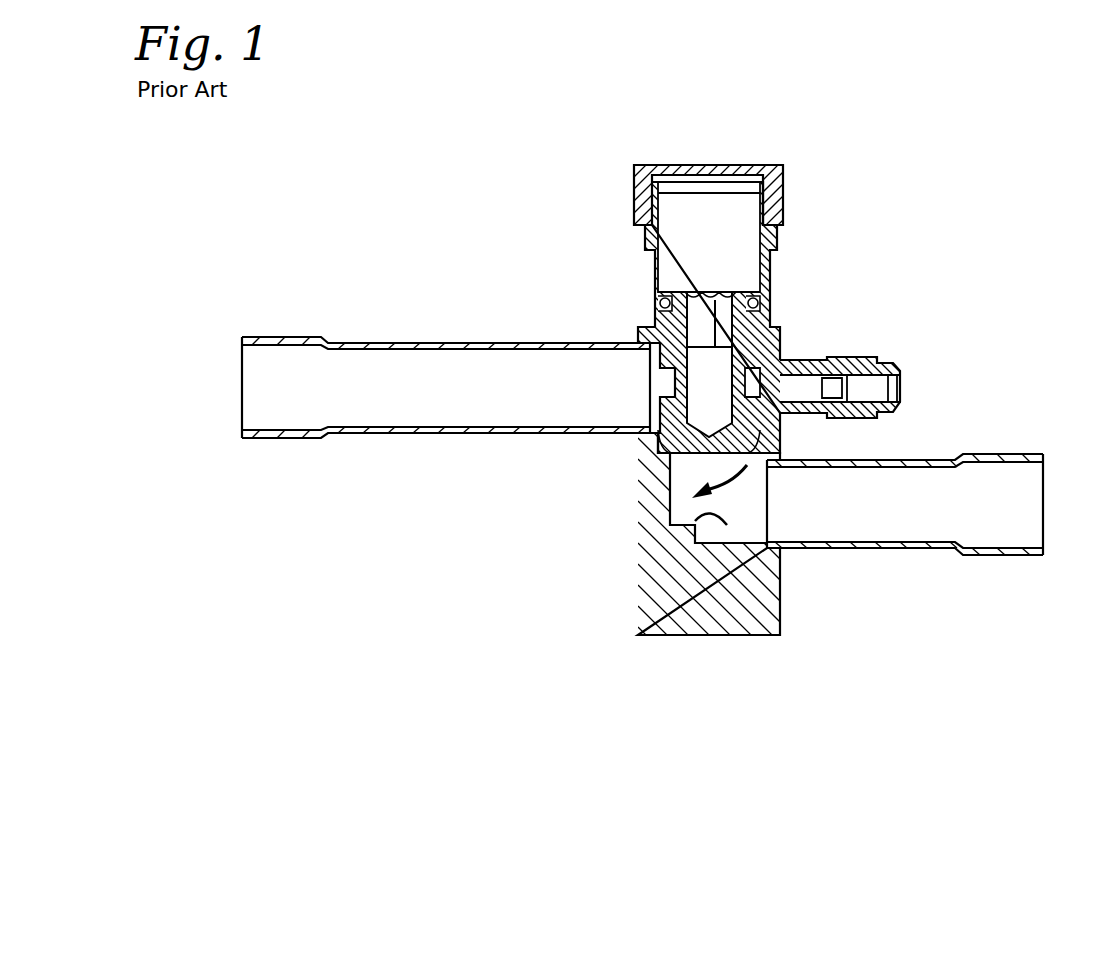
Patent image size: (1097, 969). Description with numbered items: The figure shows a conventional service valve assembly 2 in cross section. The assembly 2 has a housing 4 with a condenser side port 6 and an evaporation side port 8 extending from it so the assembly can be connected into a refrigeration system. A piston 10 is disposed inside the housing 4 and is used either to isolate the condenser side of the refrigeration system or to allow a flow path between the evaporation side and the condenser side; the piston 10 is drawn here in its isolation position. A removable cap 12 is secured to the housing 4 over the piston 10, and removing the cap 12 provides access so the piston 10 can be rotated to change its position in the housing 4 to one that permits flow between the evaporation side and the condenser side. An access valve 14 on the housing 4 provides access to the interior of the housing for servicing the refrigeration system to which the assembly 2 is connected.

The service valve assembly 2 is at (966, 224).
The housing 4 is at (782, 595).
The condenser side port 6 is at (882, 550).
The evaporation side port 8 is at (442, 342).
The piston 10 is at (663, 335).
The removable cap 12 is at (775, 163).
The access valve 14 is at (805, 360).